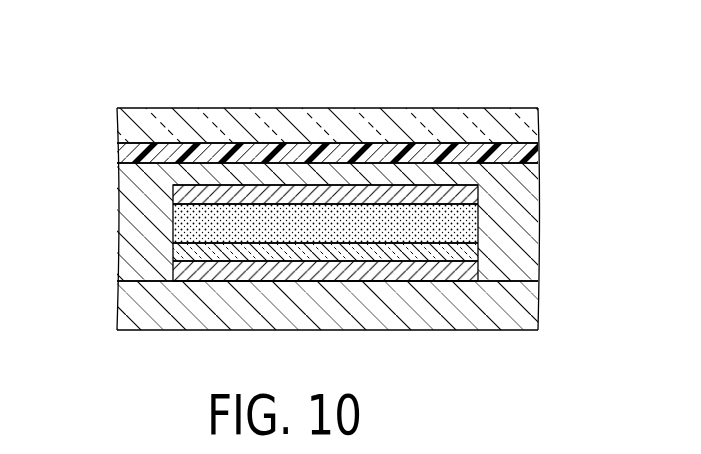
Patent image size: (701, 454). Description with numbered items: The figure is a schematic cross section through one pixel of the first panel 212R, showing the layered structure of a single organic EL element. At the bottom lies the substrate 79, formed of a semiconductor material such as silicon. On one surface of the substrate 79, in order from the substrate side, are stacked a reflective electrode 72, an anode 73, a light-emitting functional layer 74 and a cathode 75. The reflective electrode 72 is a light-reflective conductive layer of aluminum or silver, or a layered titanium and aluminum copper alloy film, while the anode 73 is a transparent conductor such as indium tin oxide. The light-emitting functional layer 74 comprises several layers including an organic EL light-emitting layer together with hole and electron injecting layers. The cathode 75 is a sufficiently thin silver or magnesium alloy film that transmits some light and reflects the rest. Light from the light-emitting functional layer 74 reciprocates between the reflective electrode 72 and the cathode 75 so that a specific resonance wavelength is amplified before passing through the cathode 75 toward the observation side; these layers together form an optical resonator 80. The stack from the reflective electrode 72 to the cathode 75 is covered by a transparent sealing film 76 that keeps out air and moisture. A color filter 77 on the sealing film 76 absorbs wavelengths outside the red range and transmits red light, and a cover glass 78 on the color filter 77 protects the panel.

The first panel 212R is at (330, 52).
The reflective electrode 72 is at (473, 273).
The anode 73 is at (467, 255).
The light-emitting functional layer 74 is at (457, 225).
The cathode 75 is at (470, 195).
The sealing film 76 is at (130, 237).
The color filter 77 is at (530, 155).
The cover glass 78 is at (523, 128).
The substrate 79 is at (520, 307).
The optical resonator 80 is at (613, 164).